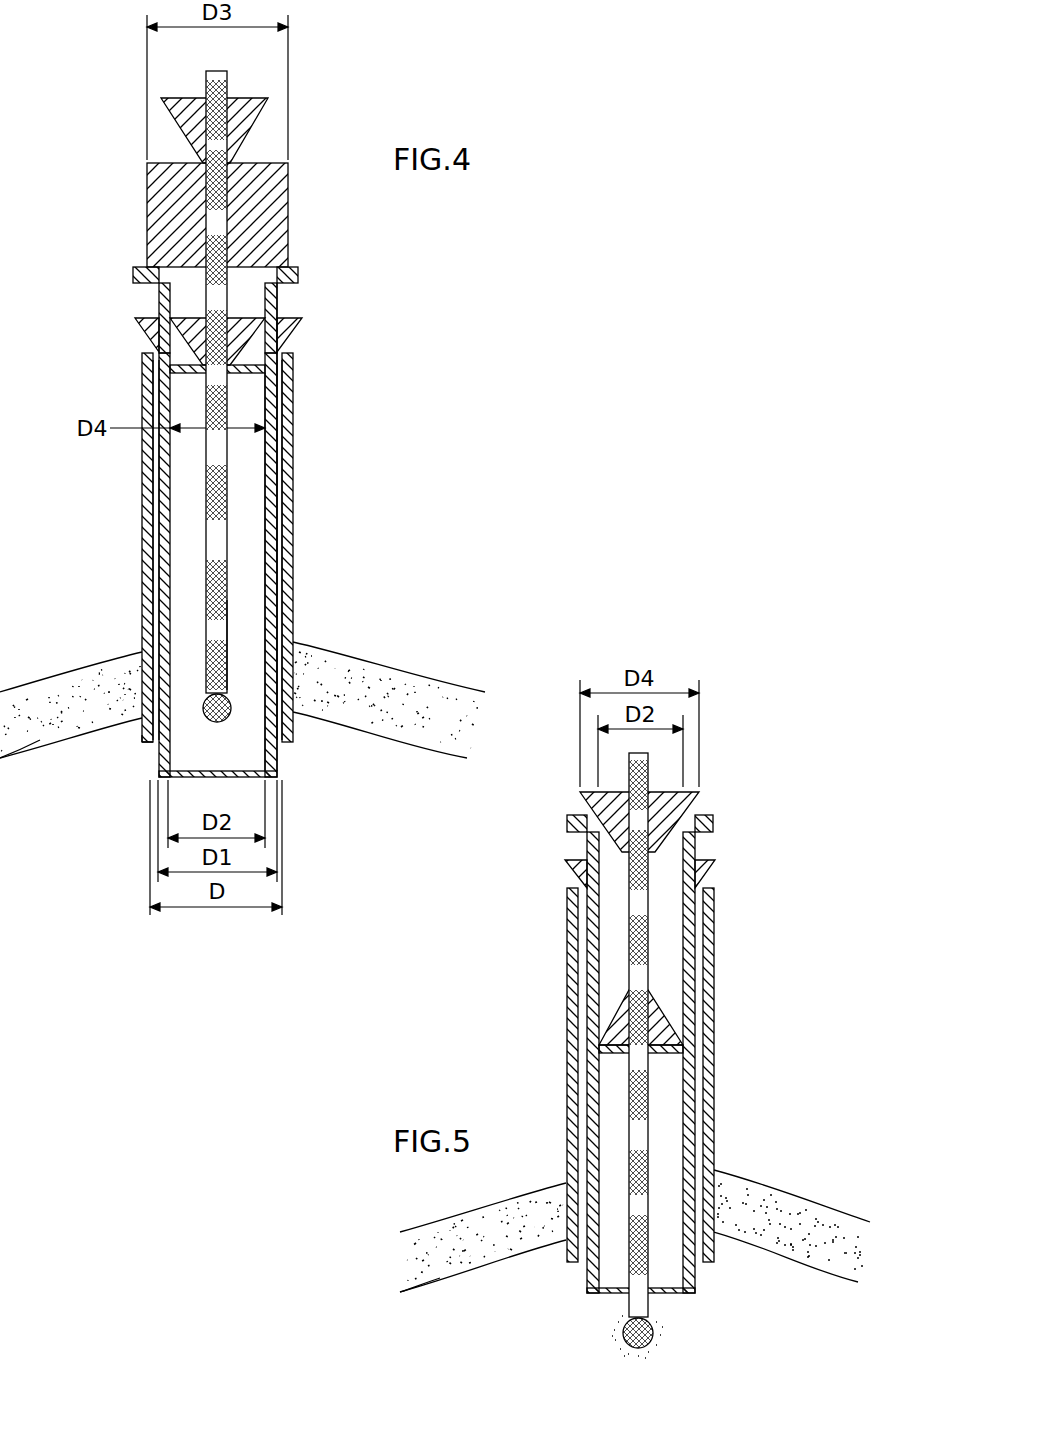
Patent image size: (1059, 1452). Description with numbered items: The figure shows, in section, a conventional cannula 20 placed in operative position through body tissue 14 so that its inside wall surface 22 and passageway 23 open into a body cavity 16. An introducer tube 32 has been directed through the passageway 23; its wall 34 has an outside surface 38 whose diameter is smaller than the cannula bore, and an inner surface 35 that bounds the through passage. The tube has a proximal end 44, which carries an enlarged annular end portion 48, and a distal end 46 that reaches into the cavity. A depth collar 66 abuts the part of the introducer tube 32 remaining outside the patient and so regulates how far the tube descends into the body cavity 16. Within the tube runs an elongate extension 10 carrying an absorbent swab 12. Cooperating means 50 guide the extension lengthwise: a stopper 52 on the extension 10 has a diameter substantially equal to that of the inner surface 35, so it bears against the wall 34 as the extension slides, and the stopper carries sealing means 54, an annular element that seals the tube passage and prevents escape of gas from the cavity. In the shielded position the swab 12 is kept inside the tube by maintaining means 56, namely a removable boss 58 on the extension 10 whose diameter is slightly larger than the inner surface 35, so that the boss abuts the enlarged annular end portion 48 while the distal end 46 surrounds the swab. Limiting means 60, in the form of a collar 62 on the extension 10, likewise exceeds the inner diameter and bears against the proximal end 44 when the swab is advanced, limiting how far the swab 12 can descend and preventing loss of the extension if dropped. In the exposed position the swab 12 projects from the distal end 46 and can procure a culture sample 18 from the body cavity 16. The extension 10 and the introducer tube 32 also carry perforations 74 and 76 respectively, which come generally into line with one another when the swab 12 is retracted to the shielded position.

In FIG. 4, the extension 10 is at (230, 480).
In FIG. 5, the extension 10 is at (632, 928).
In FIG. 4, the swab 12 is at (230, 718).
In FIG. 5, the swab 12 is at (655, 1332).
In FIG. 4, the body tissue 14 is at (42, 715).
In FIG. 5, the body tissue 14 is at (505, 1243).
In FIG. 4, the body cavity 16 is at (80, 852).
In FIG. 5, the body cavity 16 is at (511, 1323).
In FIG. 5, the culture sample 18 is at (648, 1348).
In FIG. 4, the cannula 20 is at (146, 521).
In FIG. 5, the cannula 20 is at (574, 975).
In FIG. 4, the inside wall surface 22 is at (158, 552).
In FIG. 4, the passageway 23 is at (155, 603).
In FIG. 4, the introducer tube 32 is at (165, 479).
In FIG. 5, the introducer tube 32 is at (586, 1028).
In FIG. 4, the wall 34 is at (268, 520).
In FIG. 4, the inner surface 35 is at (267, 462).
In FIG. 4, the outside surface 38 is at (278, 413).
In FIG. 4, the proximal end 44 is at (223, 332).
In FIG. 5, the proximal end 44 is at (633, 1047).
In FIG. 4, the distal end 46 is at (152, 762).
In FIG. 4, the enlarged annular end portion 48 is at (142, 268).
In FIG. 4, the cooperating means 50 is at (173, 312).
In FIG. 4, the stopper 52 is at (248, 345).
In FIG. 5, the stopper 52 is at (655, 1022).
In FIG. 4, the sealing means 54 is at (190, 372).
In FIG. 5, the sealing means 54 is at (640, 1054).
In FIG. 4, the maintaining means 56 is at (224, 190).
In FIG. 4, the removable boss 58 is at (280, 188).
In FIG. 5, the limiting means 60 is at (702, 808).
In FIG. 4, the collar 62 is at (250, 120).
In FIG. 5, the collar 62 is at (695, 796).
In FIG. 4, the depth collar 66 is at (297, 323).
In FIG. 5, the depth collar 66 is at (708, 868).
In FIG. 4, the perforations 74 is at (227, 604).
In FIG. 4, the perforations 76 is at (277, 571).